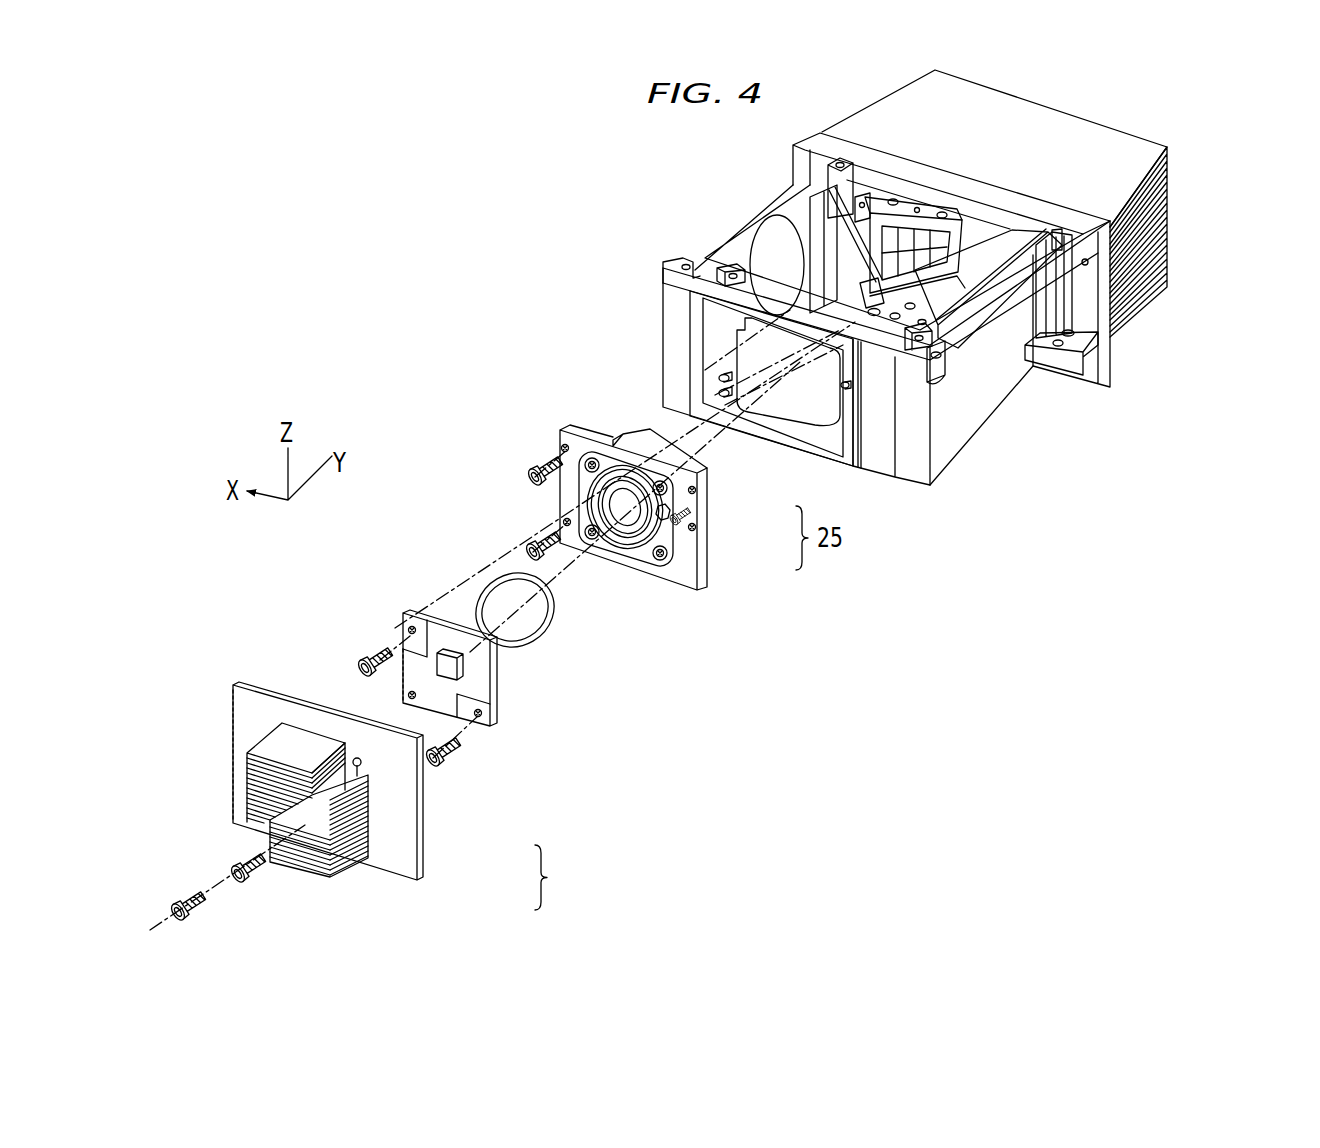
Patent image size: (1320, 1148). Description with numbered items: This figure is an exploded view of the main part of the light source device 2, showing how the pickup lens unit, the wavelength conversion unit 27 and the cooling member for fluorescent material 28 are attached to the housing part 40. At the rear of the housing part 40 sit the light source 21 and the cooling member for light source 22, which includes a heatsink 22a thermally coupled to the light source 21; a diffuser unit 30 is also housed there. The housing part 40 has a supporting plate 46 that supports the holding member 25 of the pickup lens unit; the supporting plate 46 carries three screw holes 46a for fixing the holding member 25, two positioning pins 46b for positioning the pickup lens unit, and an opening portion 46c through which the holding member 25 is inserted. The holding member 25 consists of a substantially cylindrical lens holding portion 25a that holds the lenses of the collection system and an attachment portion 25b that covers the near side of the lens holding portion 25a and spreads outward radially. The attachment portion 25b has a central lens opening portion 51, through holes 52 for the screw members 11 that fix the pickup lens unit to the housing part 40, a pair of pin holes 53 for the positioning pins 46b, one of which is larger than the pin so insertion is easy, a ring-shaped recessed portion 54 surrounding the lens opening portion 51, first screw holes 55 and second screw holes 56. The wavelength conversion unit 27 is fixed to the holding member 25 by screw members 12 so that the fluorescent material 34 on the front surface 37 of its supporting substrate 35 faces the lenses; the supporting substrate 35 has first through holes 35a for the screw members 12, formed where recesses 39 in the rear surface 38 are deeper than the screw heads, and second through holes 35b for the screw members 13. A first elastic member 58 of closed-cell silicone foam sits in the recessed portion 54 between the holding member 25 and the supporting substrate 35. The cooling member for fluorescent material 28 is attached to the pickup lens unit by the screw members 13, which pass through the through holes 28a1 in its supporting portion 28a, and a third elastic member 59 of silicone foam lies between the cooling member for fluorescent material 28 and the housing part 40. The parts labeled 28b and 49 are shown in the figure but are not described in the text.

The light source device 2 is at (1122, 122).
The screw members 11 is at (531, 476).
The screw members 12 is at (361, 670).
The screw members 13 is at (186, 922).
The light source 21 is at (879, 198).
The cooling member for light source 22 is at (1030, 203).
The heatsink 22a is at (1165, 262).
The holding member 25 is at (614, 517).
The lens holding portion 25a is at (687, 458).
The attachment portion 25b is at (701, 505).
The wavelength conversion unit 27 is at (441, 658).
The cooling member for fluorescent material 28 is at (405, 796).
The supporting portion 28a is at (371, 781).
The through holes 28a1 is at (361, 768).
The heat radiating fins 28b is at (343, 867).
The diffuser unit 30 is at (963, 297).
The fluorescent material 34 is at (440, 655).
The supporting substrate 35 is at (447, 658).
The first through holes 35a is at (480, 726).
The second through holes 35b is at (492, 667).
The front surface 37 is at (460, 625).
The rear surface 38 is at (408, 697).
The recesses 39 is at (482, 720).
The housing part 40 is at (718, 246).
The supporting plate 46 is at (749, 395).
The screw holes 46a is at (720, 376).
The positioning pins 46b is at (720, 392).
The opening portion 46c is at (808, 416).
The lens 49 is at (790, 245).
The lens opening portion 51 is at (632, 528).
The through holes 52 is at (563, 448).
The pin holes 53 is at (565, 522).
The ring-shaped recessed portion 54 is at (643, 543).
The first screw holes 55 is at (588, 460).
The second screw holes 56 is at (588, 530).
The first elastic member 58 is at (553, 608).
The third elastic member 59 is at (851, 432).